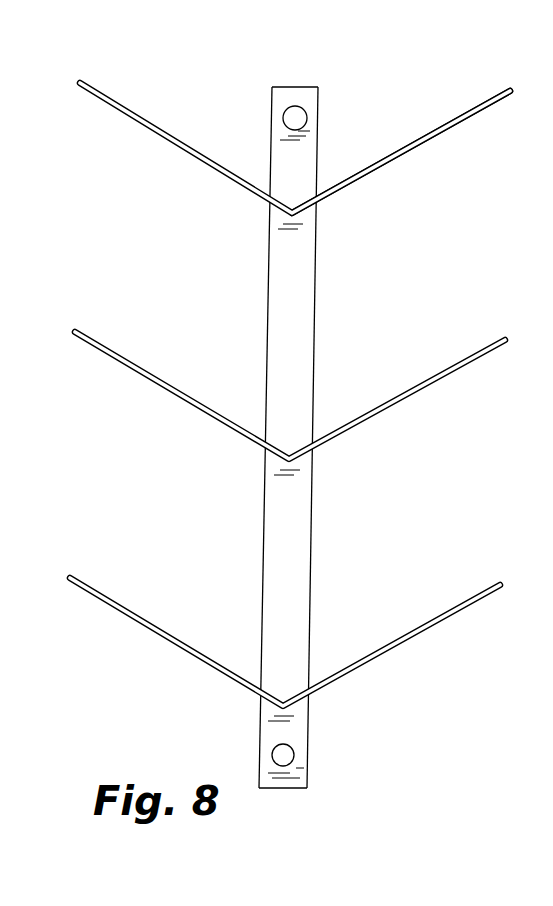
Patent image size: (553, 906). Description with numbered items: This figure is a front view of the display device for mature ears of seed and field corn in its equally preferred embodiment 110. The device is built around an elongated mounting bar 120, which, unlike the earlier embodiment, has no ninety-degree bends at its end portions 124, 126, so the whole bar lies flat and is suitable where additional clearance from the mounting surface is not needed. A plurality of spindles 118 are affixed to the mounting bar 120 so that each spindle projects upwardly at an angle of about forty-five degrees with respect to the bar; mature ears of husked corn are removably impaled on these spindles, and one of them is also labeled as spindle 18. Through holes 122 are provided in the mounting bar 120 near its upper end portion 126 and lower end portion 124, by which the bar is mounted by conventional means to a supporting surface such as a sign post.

The display device embodiment 110 is at (290, 434).
The spindles 118 is at (125, 112).
The spindles 18 is at (447, 127).
The mounting bar 120 is at (306, 324).
The through holes 122 is at (303, 119).
The end portion 124 is at (300, 795).
The end portion 126 is at (313, 78).